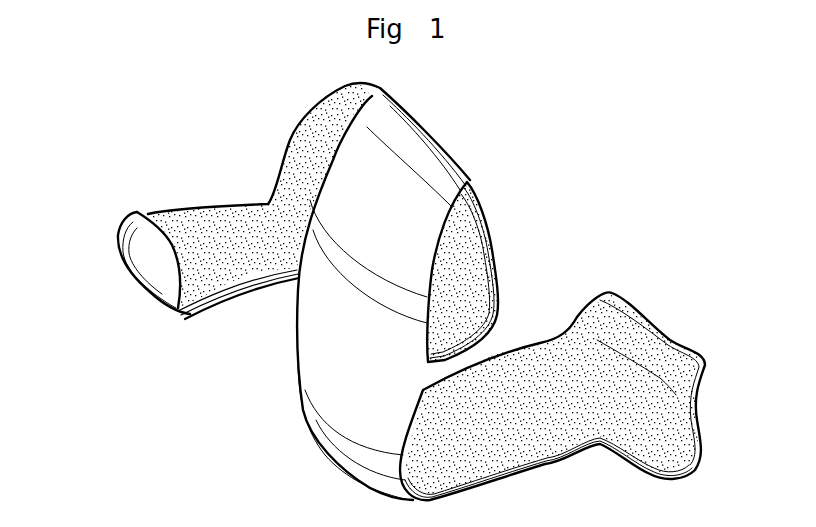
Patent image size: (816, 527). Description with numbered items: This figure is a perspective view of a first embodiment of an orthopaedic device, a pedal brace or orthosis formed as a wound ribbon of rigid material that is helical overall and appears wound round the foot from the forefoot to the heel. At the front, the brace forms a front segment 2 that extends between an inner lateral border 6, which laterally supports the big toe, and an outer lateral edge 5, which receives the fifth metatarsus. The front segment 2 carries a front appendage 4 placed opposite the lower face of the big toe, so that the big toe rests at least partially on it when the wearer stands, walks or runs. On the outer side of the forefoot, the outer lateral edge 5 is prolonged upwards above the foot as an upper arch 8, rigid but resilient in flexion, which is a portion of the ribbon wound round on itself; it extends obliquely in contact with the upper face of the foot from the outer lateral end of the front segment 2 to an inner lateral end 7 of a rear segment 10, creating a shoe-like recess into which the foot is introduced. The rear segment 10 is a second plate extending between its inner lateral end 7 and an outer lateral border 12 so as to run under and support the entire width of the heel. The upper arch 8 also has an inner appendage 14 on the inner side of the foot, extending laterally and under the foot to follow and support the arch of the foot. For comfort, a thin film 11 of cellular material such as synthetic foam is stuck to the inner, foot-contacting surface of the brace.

The front segment 2 is at (560, 478).
The front appendage 4 is at (709, 462).
The outer lateral edge 5 is at (356, 492).
The inner lateral border 6 is at (680, 320).
The inner lateral end 7 is at (256, 212).
The upper arch 8 is at (327, 360).
The rear segment 10 is at (200, 291).
The thin film 11 is at (360, 90).
The outer lateral border 12 is at (131, 250).
The inner appendage 14 is at (520, 296).